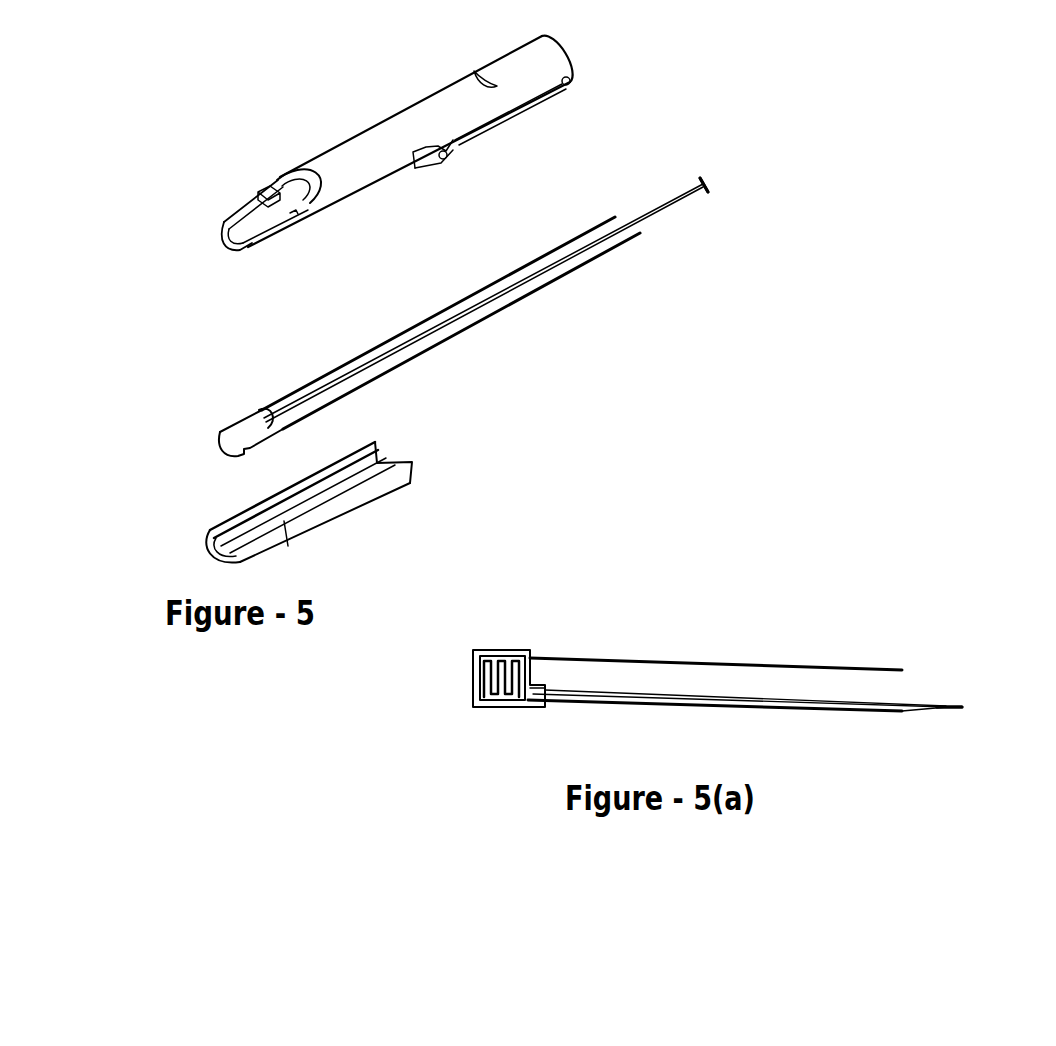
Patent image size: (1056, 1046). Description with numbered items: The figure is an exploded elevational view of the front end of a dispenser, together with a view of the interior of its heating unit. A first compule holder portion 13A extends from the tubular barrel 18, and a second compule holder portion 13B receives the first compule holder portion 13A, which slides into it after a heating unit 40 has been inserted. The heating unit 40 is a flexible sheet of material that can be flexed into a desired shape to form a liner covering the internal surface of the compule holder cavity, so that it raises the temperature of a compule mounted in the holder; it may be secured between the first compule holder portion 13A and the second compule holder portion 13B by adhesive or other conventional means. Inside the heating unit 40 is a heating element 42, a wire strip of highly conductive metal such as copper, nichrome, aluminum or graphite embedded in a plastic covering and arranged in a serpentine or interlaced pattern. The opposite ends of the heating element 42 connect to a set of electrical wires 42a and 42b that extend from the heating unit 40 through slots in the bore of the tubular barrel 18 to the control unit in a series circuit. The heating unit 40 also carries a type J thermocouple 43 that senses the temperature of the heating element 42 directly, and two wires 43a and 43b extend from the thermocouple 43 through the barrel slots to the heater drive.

In FIG. 5, the tubular barrel 18 is at (372, 132).
In FIG. 5, the first compule holder portion 13A is at (230, 213).
In FIG. 5, the second compule holder portion 13B is at (208, 527).
In FIG. 5, the heating unit 40 is at (218, 430).
In FIG. 5A, the heating unit 40 is at (473, 681).
In FIG. 5A, the heating element 42 is at (495, 648).
In FIG. 5, the electrical wire 42a is at (475, 332).
In FIG. 5A, the electrical wire 42a is at (777, 710).
In FIG. 5, the electrical wire 42b is at (422, 320).
In FIG. 5A, the electrical wire 42b is at (754, 662).
In FIG. 5, the thermocouple 43 is at (262, 410).
In FIG. 5A, the thermocouple 43 is at (531, 696).
In FIG. 5, the thermocouple wire 43a is at (712, 192).
In FIG. 5A, the thermocouple wire 43a is at (947, 702).
In FIG. 5, the thermocouple wire 43b is at (697, 182).
In FIG. 5A, the thermocouple wire 43b is at (948, 716).